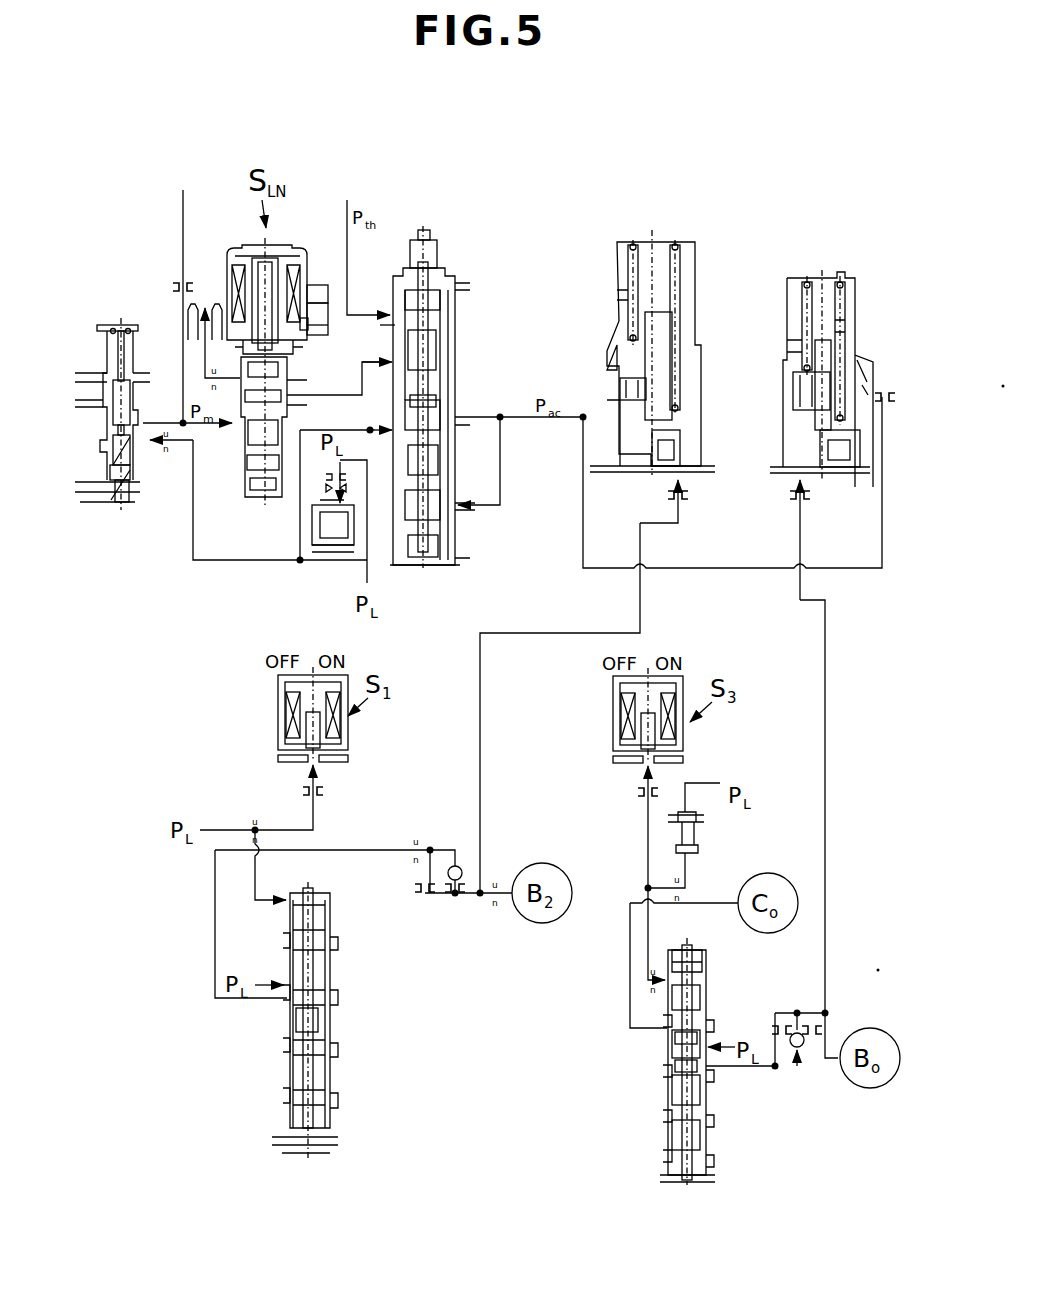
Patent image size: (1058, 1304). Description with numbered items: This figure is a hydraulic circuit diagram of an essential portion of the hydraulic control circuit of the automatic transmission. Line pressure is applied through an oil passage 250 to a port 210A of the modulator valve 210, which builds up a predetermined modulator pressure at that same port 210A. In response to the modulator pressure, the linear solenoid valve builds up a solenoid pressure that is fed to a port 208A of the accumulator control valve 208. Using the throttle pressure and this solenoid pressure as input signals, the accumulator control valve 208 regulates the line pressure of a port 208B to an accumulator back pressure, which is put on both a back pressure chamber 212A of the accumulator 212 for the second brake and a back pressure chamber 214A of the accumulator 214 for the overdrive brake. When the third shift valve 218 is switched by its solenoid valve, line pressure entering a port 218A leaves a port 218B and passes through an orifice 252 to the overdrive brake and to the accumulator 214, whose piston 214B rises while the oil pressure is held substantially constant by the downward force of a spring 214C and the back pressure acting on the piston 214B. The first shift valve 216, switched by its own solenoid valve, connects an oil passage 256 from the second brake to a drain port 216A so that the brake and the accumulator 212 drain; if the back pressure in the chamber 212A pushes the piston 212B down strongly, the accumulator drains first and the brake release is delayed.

The accumulator control valve 208 is at (458, 246).
The port 208A is at (387, 388).
The port 208B is at (400, 405).
The modulator valve 210 is at (117, 310).
The port 210A is at (138, 468).
The accumulator 212 is at (686, 232).
The back pressure chamber 212A is at (612, 350).
The piston 212B is at (629, 311).
The accumulator 214 is at (851, 258).
The back pressure chamber 214A is at (860, 375).
The piston 214B is at (800, 351).
The spring 214C is at (840, 332).
The first shift valve 216 is at (342, 1042).
The drain port 216A is at (288, 1014).
The third shift valve 218 is at (642, 1058).
The port 218A is at (705, 1044).
The port 218B is at (705, 1067).
The oil passage 250 is at (183, 254).
The orifice 252 is at (797, 1058).
The oil passage 256 is at (235, 1000).